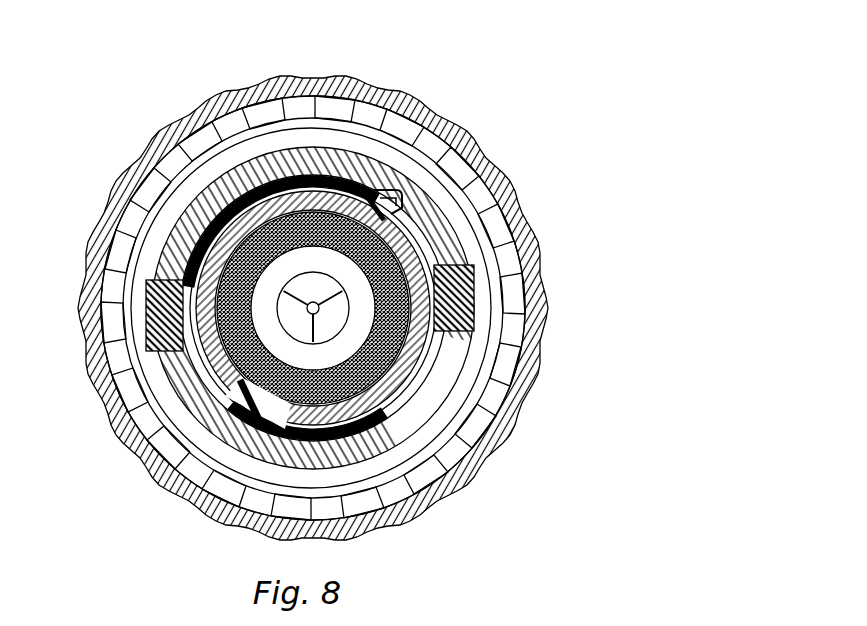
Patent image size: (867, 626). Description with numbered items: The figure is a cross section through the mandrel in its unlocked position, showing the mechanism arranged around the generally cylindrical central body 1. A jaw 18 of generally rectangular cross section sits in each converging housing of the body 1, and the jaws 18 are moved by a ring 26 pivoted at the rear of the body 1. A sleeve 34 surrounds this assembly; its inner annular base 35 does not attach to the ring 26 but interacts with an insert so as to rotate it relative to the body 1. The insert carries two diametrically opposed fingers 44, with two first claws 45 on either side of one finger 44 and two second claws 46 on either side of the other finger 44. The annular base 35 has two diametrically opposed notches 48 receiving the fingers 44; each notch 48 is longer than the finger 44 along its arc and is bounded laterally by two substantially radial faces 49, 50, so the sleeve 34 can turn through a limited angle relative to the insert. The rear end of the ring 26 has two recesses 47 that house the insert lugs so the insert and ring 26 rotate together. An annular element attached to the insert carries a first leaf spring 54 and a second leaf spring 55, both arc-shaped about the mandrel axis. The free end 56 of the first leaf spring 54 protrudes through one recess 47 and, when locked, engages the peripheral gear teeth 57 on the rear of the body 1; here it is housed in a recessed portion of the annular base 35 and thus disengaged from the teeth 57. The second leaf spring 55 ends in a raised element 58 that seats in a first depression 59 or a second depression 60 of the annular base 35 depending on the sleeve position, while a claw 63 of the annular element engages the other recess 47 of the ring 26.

The central body 1 is at (138, 308).
The jaw 18 is at (258, 205).
The ring for moving the jaws 26 is at (378, 470).
The sleeve 34 is at (430, 490).
The annular base 35 is at (430, 205).
The finger 44 is at (140, 272).
The first claw 45 is at (190, 225).
The second claw 46 is at (440, 175).
The recess 47 is at (178, 472).
The notch 48 is at (160, 215).
The lateral face 49 is at (115, 345).
The lateral face 50 is at (150, 255).
The first leaf spring 54 is at (327, 455).
The second leaf spring 55 is at (297, 165).
The free end 56 is at (230, 505).
The peripheral gear teeth 57 is at (447, 470).
The raised element 58 is at (380, 163).
The first depression 59 is at (388, 202).
The second depression 60 is at (413, 180).
The claw 63 is at (367, 193).